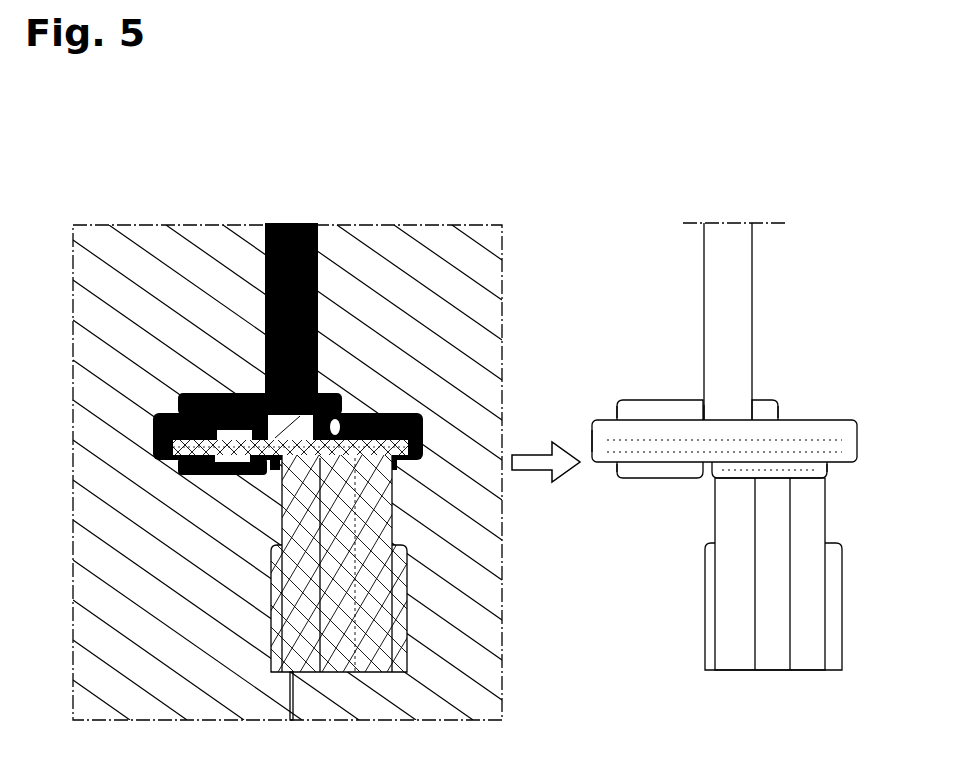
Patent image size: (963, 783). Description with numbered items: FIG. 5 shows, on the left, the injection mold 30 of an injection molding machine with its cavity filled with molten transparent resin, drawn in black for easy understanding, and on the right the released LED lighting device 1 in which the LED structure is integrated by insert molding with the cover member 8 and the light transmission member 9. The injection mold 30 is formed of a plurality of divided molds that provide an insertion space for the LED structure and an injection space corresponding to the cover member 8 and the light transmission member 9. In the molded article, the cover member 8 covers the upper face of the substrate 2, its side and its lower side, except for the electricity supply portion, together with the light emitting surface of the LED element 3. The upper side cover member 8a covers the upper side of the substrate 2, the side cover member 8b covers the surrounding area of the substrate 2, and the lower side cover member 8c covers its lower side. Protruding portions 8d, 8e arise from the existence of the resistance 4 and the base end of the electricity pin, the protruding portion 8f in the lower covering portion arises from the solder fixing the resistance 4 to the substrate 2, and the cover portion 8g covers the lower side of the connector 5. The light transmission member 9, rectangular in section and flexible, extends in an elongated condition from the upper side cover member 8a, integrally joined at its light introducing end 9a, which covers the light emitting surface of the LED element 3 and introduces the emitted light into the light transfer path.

The sealing structure 1 is at (683, 290).
The substrate 2 is at (185, 443).
The LED element 3 is at (307, 452).
The resistance 4 is at (636, 405).
The connector 5 is at (392, 607).
The cover member 8 is at (912, 408).
The upper side cover member 8a is at (823, 422).
The side cover member 8b is at (849, 443).
The lower side cover member 8c is at (826, 459).
The protruding portion 8d is at (617, 405).
The protruding portion 8e is at (779, 405).
The protruding portion 8f is at (625, 478).
The cover portion 8g is at (827, 477).
The light transmission member 9 is at (752, 268).
The light introducing end 9a is at (705, 415).
The injection mold 30 is at (491, 221).